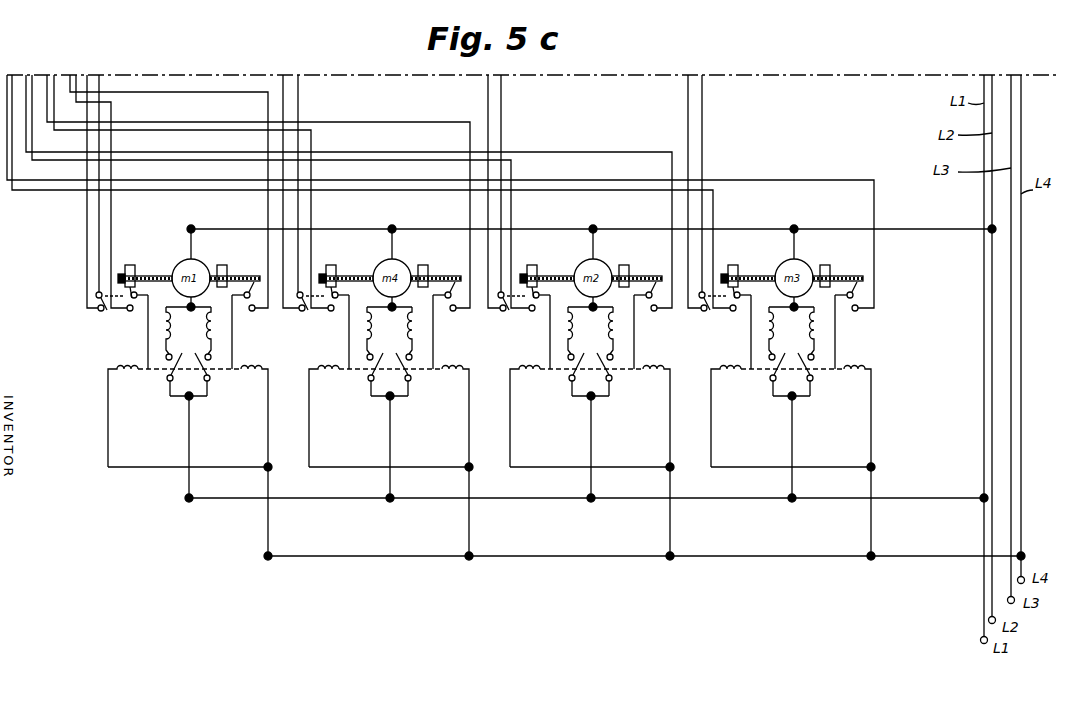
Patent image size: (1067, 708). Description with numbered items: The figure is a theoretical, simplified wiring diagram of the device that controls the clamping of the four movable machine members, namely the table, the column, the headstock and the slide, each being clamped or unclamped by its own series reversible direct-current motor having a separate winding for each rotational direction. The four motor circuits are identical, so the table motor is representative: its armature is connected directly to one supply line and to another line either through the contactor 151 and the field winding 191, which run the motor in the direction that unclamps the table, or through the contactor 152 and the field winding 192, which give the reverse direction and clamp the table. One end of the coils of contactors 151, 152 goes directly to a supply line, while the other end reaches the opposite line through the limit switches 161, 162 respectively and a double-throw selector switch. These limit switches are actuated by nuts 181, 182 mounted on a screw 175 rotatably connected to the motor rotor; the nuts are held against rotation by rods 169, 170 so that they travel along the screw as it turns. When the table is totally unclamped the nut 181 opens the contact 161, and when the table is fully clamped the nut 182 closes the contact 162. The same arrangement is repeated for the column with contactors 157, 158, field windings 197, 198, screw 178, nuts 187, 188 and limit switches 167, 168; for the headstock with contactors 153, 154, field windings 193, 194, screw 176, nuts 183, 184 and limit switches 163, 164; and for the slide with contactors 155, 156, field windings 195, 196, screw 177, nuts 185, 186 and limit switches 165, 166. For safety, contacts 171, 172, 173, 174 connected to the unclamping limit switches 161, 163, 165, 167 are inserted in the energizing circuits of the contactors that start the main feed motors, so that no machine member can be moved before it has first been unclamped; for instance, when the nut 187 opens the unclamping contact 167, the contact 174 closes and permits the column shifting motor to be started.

The contactor 151 is at (136, 417).
The contactor 152 is at (242, 417).
The contactor 153 is at (538, 417).
The contactor 154 is at (645, 417).
The contactor 155 is at (738, 417).
The contactor 156 is at (844, 417).
The contactor 157 is at (337, 417).
The contactor 158 is at (443, 417).
The limit switch 161 is at (131, 312).
The limit switch 162 is at (251, 312).
The limit switch 163 is at (535, 330).
The limit switch 164 is at (654, 325).
The limit switch 165 is at (739, 330).
The limit switch 166 is at (856, 325).
The limit switch 167 is at (332, 330).
The limit switch 168 is at (440, 333).
The rod 169 is at (144, 272).
The rod 170 is at (245, 272).
The contact 171 is at (97, 300).
The contact 172 is at (505, 314).
The contact 173 is at (705, 315).
The contact 174 is at (303, 314).
The screw 175 is at (152, 272).
The screw 176 is at (540, 271).
The screw 177 is at (751, 262).
The screw 178 is at (352, 262).
The nut 181 is at (130, 264).
The nut 182 is at (229, 258).
The nut 183 is at (554, 260).
The nut 184 is at (635, 263).
The nut 185 is at (737, 268).
The nut 186 is at (835, 263).
The nut 187 is at (331, 268).
The nut 188 is at (431, 263).
The field winding 191 is at (166, 322).
The field winding 192 is at (214, 322).
The field winding 193 is at (570, 327).
The field winding 194 is at (621, 327).
The field winding 195 is at (771, 327).
The field winding 196 is at (822, 327).
The field winding 197 is at (367, 326).
The field winding 198 is at (453, 325).